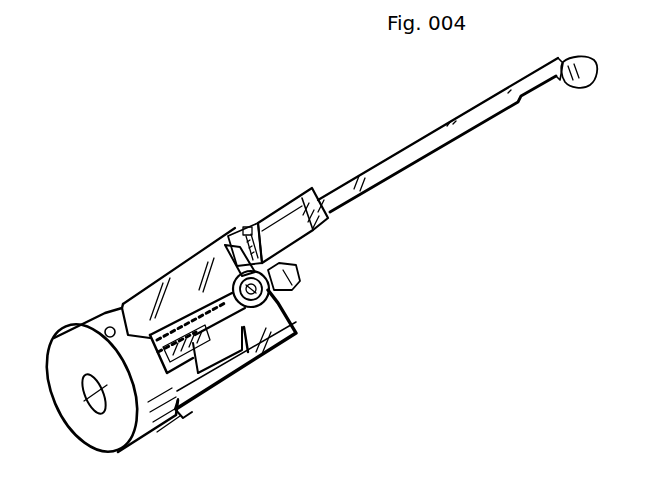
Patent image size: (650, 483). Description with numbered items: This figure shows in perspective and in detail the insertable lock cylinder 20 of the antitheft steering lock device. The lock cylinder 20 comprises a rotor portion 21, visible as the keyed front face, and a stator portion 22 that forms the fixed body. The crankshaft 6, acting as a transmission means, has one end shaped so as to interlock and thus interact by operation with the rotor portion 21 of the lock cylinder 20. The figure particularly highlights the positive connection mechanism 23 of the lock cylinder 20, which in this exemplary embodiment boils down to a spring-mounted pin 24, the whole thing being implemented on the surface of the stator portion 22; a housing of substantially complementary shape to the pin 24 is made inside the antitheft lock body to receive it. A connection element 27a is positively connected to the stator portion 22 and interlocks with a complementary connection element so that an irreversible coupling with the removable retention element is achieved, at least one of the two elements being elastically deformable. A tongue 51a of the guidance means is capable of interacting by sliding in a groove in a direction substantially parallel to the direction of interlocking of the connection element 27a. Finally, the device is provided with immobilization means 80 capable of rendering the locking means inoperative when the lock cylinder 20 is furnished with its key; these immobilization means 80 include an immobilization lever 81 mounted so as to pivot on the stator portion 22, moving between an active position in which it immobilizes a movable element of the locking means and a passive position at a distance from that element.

The lock cylinder 20 is at (84, 330).
The rotor portion 21 is at (90, 405).
The stator portion 22 is at (268, 358).
The positive connection mechanism 23 is at (215, 268).
The spring-mounted pin 24 is at (276, 318).
The crankshaft 6 is at (301, 282).
The connection element 27a is at (247, 230).
The tongue 51a is at (290, 203).
The immobilization means 80 is at (443, 147).
The immobilization lever 81 is at (580, 83).